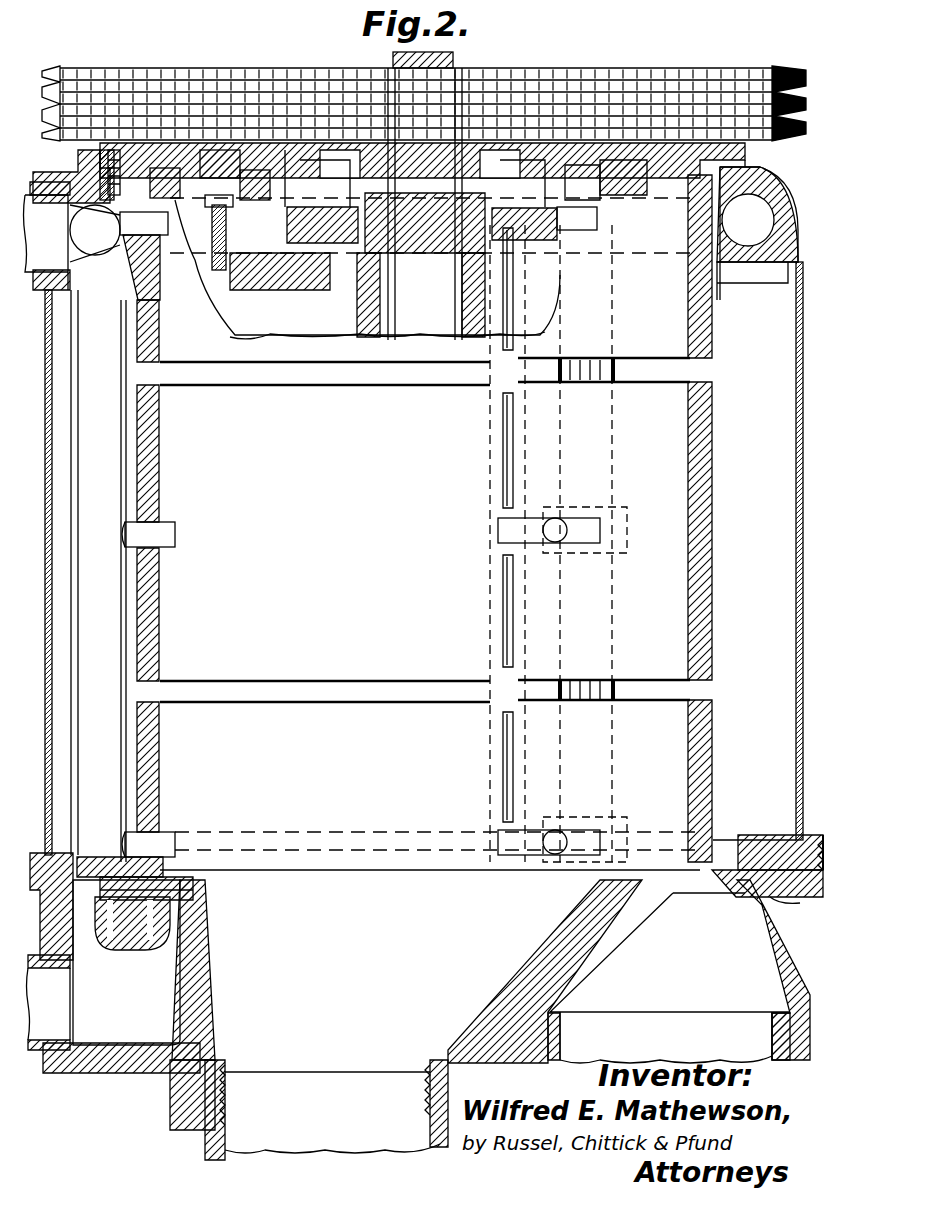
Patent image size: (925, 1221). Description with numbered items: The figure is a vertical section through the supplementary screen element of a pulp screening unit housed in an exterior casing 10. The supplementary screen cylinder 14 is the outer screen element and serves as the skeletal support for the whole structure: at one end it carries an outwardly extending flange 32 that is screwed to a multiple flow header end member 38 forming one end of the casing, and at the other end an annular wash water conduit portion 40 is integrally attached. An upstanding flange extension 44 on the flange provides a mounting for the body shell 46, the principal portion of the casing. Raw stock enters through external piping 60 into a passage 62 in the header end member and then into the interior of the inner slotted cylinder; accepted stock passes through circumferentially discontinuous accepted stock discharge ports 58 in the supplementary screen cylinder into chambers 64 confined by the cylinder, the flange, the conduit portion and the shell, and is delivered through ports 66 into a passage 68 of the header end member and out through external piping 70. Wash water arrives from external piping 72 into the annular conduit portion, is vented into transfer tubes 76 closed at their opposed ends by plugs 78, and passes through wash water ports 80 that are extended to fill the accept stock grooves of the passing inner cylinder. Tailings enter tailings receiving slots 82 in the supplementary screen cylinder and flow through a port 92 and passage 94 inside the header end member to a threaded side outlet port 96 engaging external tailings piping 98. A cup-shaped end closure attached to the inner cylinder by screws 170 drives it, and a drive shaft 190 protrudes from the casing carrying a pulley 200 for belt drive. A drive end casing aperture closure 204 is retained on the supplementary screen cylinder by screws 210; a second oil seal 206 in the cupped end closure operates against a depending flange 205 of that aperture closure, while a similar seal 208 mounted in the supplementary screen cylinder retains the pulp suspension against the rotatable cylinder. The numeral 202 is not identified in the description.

The exterior casing 10 is at (769, 229).
The supplementary cylindrical screen element 14 is at (300, 458).
The outwardly extending flange 32 is at (815, 848).
The multiple flow header end member 38 is at (185, 1068).
The annular wash water conduit portion 40 is at (752, 216).
The upstanding flange extension 44 is at (793, 835).
The body shell 46 is at (795, 598).
The accepted stock discharge ports 58 is at (380, 386).
The external piping 60 is at (292, 1108).
The passage 62 is at (292, 1010).
The chambers 64 is at (770, 755).
The ports 66 is at (800, 898).
The passage 68 is at (702, 961).
The external piping 70 is at (694, 1043).
The external piping 72 is at (56, 221).
The transfer tubes 76 is at (112, 580).
The plugs 78 is at (98, 857).
The wash water ports 80 is at (172, 530).
The tailings receiving slots 82 is at (512, 310).
The port 92 is at (120, 888).
The passage 94 is at (85, 920).
The threaded side outlet port 96 is at (58, 1073).
The external tailings piping 98 is at (60, 1002).
The screws 170 is at (219, 195).
The drive shaft 190 is at (428, 62).
The pulley 200 is at (68, 68).
The top plate 202 is at (372, 150).
The drive end casing aperture closure 204 is at (100, 155).
The depending flange 205 is at (235, 178).
The second oil seal 206 is at (255, 170).
The seal 208 is at (165, 168).
The screws 210 is at (116, 150).